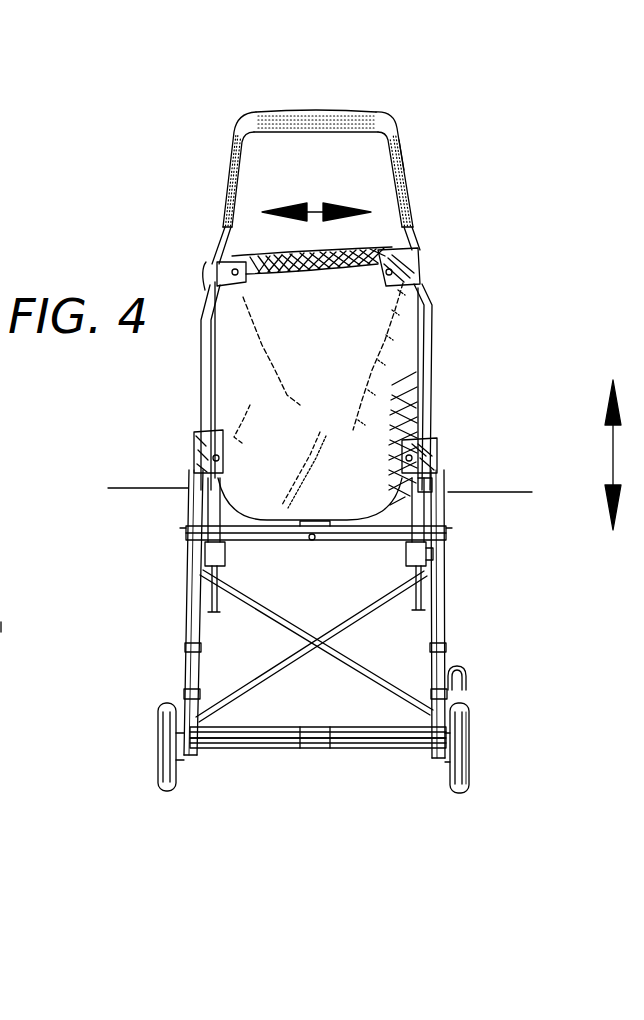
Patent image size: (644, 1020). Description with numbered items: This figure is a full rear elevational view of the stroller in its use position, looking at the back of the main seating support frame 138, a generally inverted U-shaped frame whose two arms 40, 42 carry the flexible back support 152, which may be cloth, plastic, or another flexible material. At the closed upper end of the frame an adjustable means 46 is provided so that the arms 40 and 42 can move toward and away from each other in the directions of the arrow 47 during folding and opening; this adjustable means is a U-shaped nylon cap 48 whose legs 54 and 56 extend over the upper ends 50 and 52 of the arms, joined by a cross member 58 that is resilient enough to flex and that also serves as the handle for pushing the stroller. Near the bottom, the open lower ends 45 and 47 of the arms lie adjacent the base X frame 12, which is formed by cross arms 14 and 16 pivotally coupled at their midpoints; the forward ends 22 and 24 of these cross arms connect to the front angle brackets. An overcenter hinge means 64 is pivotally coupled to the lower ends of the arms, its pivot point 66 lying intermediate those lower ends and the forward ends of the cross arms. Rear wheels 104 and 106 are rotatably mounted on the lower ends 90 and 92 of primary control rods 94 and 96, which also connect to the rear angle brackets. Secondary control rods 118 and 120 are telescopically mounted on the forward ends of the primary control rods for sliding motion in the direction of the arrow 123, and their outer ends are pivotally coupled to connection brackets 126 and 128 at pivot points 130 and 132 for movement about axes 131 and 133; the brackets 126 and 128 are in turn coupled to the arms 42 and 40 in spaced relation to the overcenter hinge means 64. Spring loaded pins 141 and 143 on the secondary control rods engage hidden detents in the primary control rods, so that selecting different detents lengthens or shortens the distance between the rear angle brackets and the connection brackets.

The base X frame 12 is at (313, 652).
The cross arm 14 is at (250, 684).
The cross arm 16 is at (390, 688).
The forward end of cross arm 22 is at (362, 610).
The forward end of cross arm 24 is at (203, 598).
The arm of main seating support frame 40 is at (411, 188).
The arm of main seating support frame 42 is at (228, 180).
The lower end of arm 45 is at (375, 549).
The adjustable means 46 is at (268, 100).
The arrow 47 is at (320, 212).
The U-shaped nylon cap 48 is at (430, 158).
The upper end of arm 50 is at (428, 302).
The upper end of arm 52 is at (206, 300).
The leg of nylon cap 54 is at (420, 210).
The leg of nylon cap 56 is at (218, 213).
The cross member 58 is at (346, 113).
The overcenter hinge means 64 is at (432, 572).
The pivot point 66 is at (312, 542).
The lower end of primary control rod 90 is at (193, 755).
The lower end of primary control rod 92 is at (437, 767).
The primary control rod 94 is at (188, 676).
The primary control rod 96 is at (446, 660).
The rear wheel 104 is at (160, 718).
The rear wheel 106 is at (468, 748).
The secondary control rod 118 is at (191, 628).
The secondary control rod 120 is at (446, 628).
The arrow 123 is at (610, 445).
The connection bracket 126 is at (218, 482).
The connection bracket 128 is at (410, 482).
The pivot point 130 is at (193, 490).
The pivot axis 131 is at (146, 488).
The pivot point 132 is at (434, 482).
The pivot axis 133 is at (479, 492).
The main seating support frame 138 is at (441, 374).
The spring loaded pin 141 is at (206, 524).
The spring loaded pin 143 is at (428, 498).
The back support 152 is at (316, 383).